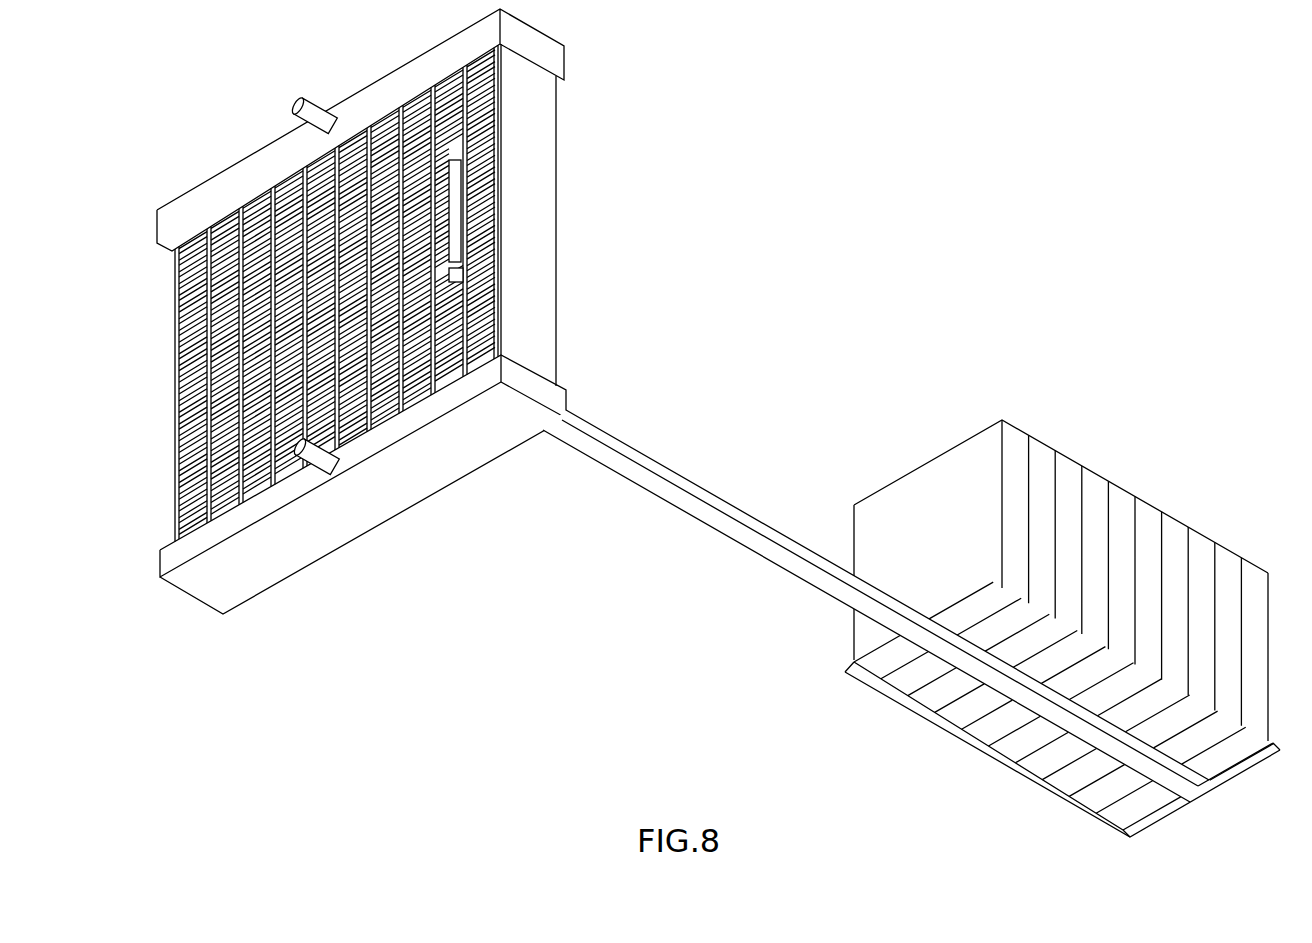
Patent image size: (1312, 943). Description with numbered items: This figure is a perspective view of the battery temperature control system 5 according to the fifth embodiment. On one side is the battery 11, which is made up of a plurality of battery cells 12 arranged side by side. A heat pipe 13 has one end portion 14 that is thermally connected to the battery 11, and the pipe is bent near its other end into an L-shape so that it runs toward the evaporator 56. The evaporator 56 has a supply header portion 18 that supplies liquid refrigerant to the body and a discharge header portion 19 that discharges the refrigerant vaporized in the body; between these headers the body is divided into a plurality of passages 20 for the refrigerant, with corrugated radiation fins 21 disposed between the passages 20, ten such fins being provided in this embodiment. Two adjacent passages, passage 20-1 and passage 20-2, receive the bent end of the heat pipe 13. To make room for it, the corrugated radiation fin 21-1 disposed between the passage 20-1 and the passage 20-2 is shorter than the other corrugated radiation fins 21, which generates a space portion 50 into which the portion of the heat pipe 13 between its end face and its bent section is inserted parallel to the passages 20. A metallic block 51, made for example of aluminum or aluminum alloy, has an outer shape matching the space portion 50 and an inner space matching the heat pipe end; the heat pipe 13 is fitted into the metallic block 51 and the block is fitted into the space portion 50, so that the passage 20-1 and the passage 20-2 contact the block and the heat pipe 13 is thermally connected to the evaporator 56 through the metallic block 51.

The battery temperature control system 5 is at (852, 218).
The battery 11 is at (1076, 575).
The battery cell 12 is at (1013, 445).
The heat pipe 13 is at (782, 555).
The one end portion 14 is at (1093, 733).
The supply header portion 18 is at (367, 512).
The discharge header portion 19 is at (273, 157).
The passage 20 is at (403, 128).
The passage 20-1 is at (427, 440).
The passage 20-2 is at (476, 390).
The corrugated radiation fin 21 is at (504, 355).
The corrugated radiation fin 21-1 is at (455, 82).
The space portion 50 is at (452, 300).
The metallic block 51 is at (455, 207).
The evaporator 56 is at (557, 247).